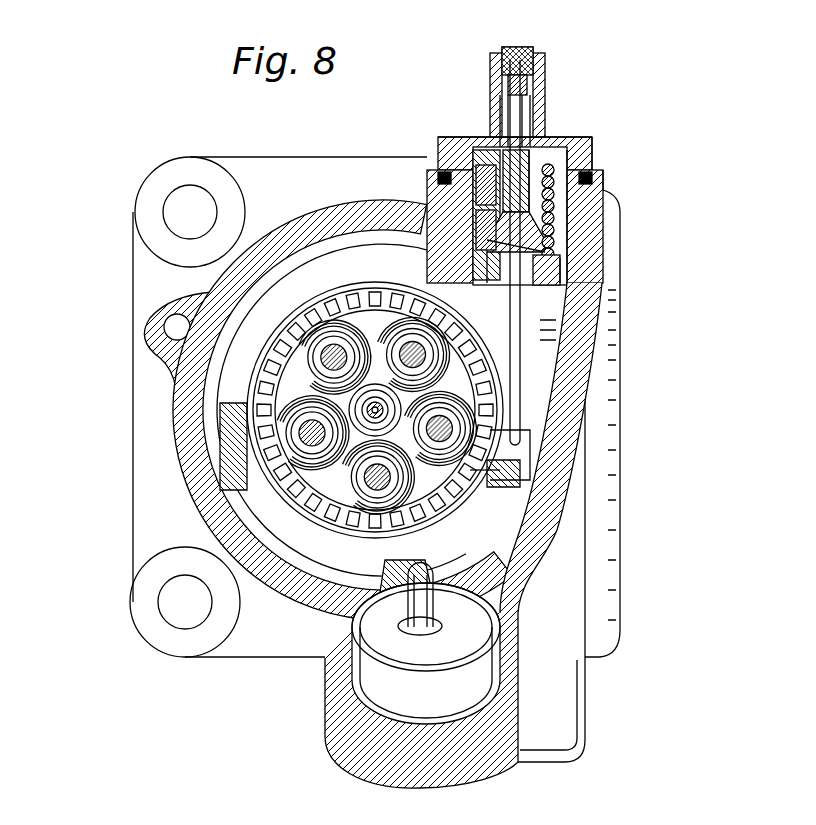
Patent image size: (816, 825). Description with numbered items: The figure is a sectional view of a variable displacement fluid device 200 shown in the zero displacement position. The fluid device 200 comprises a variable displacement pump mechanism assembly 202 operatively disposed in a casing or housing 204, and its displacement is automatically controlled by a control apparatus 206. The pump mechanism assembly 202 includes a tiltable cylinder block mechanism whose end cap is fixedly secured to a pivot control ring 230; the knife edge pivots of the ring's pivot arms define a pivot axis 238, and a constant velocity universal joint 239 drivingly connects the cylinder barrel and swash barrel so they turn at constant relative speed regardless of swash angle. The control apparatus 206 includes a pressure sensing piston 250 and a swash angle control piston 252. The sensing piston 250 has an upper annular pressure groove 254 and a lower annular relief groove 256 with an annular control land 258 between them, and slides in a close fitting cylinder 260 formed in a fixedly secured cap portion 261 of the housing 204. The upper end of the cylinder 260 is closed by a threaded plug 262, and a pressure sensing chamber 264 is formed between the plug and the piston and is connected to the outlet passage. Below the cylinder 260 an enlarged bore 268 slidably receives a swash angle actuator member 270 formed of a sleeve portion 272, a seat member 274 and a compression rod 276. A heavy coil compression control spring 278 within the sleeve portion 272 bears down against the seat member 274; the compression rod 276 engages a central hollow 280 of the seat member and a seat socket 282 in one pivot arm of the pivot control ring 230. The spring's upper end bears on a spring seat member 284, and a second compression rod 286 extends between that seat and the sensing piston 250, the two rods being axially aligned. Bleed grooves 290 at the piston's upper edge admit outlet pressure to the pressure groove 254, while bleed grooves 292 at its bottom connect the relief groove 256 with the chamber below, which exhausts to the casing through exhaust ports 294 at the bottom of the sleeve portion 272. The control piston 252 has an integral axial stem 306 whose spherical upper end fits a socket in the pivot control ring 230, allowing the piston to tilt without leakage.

The variable displacement fluid device 200 is at (585, 130).
The variable displacement pump mechanism assembly 202 is at (228, 385).
The casing or housing 204 is at (597, 296).
The control system or apparatus 206 is at (528, 353).
The pivot control ring 230 is at (222, 437).
The pivot axis 238 is at (480, 478).
The constant velocity universal joint 239 is at (331, 304).
The pressure sensing piston 250 is at (532, 110).
The swash angle control piston 252 is at (467, 637).
The upper annular pressure groove 254 is at (498, 112).
The lower annular relief groove 256 is at (500, 127).
The annular control land 258 is at (500, 118).
The close fitting cylinder 260 is at (545, 78).
The cap portion 261 is at (583, 140).
The threaded plug 262 is at (512, 53).
The pressure sensing chamber 264 is at (535, 56).
The enlarged bore 268 is at (556, 205).
The swash angle actuator member 270 is at (565, 300).
The sleeve portion 272 is at (567, 225).
The seat member 274 is at (560, 330).
The compression rod 276 is at (521, 352).
The coil compression control spring 278 is at (530, 243).
The central hollow 280 is at (560, 273).
The seat socket 282 is at (505, 438).
The spring seat member 284 is at (570, 145).
The compression rod 286 is at (577, 156).
The bleed grooves 290 is at (488, 88).
The bleed grooves 292 is at (517, 167).
The exhaust ports 294 is at (567, 263).
The integral axial stem 306 is at (408, 598).